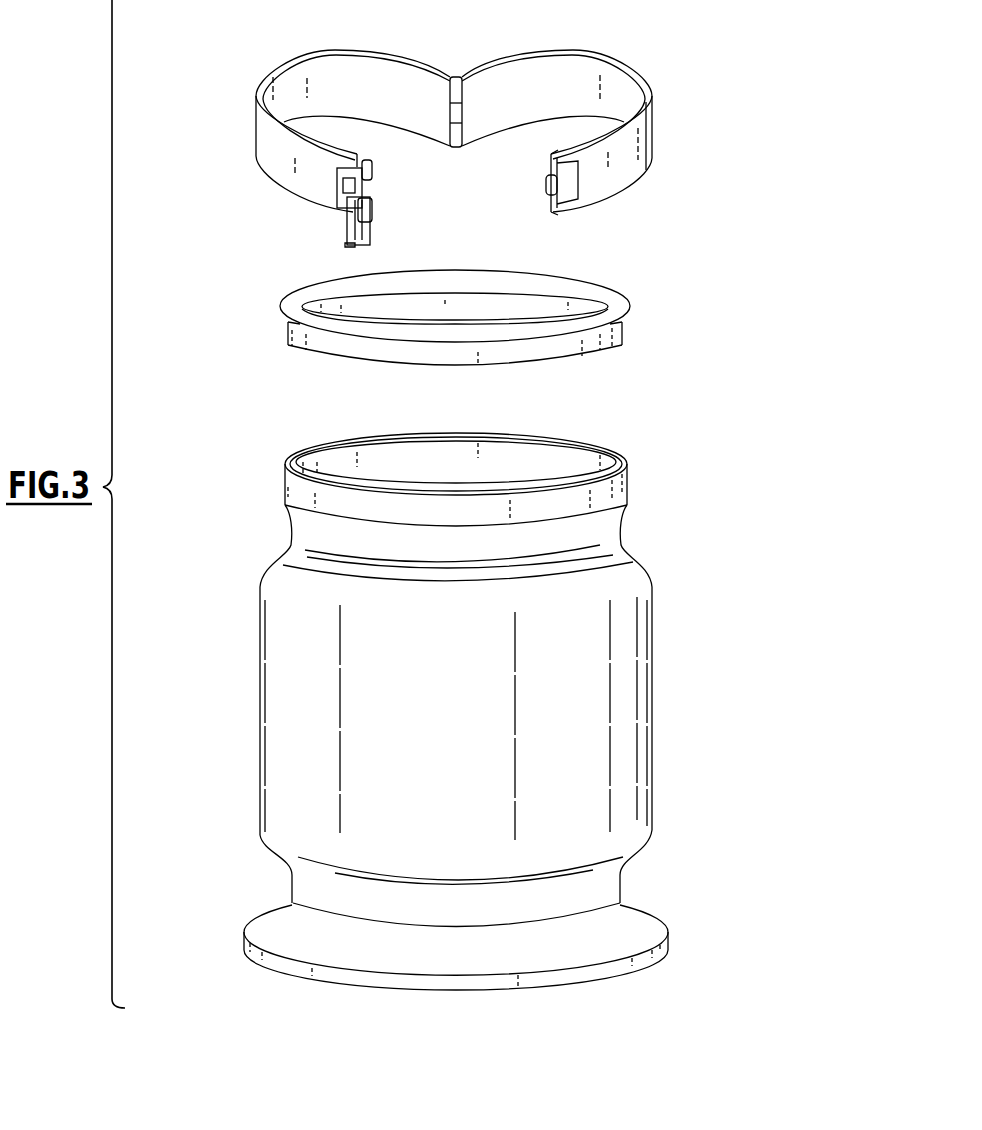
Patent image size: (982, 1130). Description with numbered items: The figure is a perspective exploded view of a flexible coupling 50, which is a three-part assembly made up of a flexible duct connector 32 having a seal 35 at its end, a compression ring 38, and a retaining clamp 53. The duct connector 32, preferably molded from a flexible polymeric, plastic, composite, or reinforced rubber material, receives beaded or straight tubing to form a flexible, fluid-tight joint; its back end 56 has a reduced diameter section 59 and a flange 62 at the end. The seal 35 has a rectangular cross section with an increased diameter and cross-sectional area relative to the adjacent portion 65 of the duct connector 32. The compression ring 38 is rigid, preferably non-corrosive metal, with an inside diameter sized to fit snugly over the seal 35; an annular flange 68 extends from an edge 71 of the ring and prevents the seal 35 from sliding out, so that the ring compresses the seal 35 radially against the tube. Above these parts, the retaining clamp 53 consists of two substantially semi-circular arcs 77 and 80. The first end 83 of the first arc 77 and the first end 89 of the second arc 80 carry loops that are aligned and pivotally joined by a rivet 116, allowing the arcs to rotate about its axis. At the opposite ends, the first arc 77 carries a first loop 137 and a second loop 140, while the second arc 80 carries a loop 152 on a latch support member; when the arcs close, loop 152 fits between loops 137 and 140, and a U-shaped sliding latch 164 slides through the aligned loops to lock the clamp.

The flexible duct connector 32 is at (451, 738).
The seal 35 is at (633, 470).
The compression ring 38 is at (635, 340).
The flexible coupling 50 is at (494, 123).
The retaining clamp 53 is at (464, 127).
The back end 56 is at (492, 974).
The reduced diameter section 59 is at (622, 880).
The flange 62 is at (618, 942).
The adjacent portion 65 is at (618, 532).
The annular flange 68 is at (500, 303).
The edge 71 is at (630, 307).
The first arc 77 is at (257, 96).
The second arc 80 is at (603, 141).
The first end of the first arc 83 is at (438, 103).
The first end of the second arc 89 is at (470, 103).
The rivet 116 is at (454, 80).
The first loop 137 is at (375, 170).
The second loop 140 is at (372, 213).
The loop 152 is at (565, 190).
The sliding latch 164 is at (354, 202).